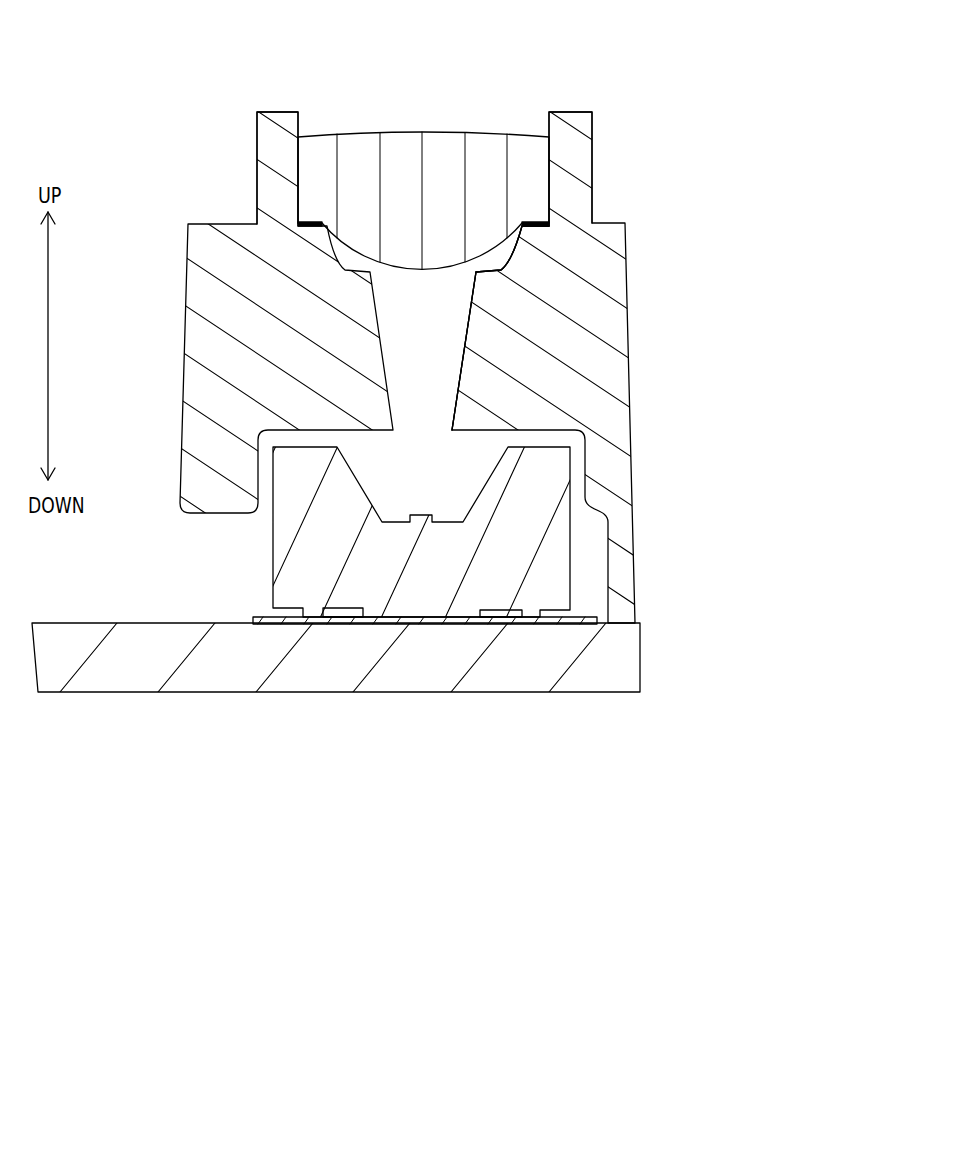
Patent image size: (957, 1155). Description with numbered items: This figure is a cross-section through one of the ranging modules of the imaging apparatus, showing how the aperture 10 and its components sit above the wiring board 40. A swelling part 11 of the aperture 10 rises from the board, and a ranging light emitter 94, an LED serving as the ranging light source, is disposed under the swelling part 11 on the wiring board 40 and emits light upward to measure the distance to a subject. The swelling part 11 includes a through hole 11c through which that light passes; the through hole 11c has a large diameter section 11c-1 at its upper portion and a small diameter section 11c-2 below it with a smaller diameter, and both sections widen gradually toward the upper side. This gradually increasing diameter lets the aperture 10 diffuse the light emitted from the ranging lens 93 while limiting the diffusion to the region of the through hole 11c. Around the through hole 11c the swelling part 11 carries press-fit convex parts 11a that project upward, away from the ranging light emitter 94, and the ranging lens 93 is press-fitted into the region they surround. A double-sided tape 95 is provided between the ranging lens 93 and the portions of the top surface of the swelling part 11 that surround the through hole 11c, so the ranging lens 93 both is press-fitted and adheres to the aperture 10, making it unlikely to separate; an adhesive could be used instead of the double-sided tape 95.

The aperture 10 is at (640, 450).
The swelling part 11 is at (193, 335).
The press-fit convex part 11a is at (265, 189).
The through hole 11c is at (722, 267).
The large diameter section 11c-1 is at (517, 241).
The small diameter section 11c-2 is at (470, 342).
The ranging lens 93 is at (403, 145).
The ranging light emitter 94 is at (562, 538).
The double-sided tape 95 is at (541, 222).
The wiring board 40 is at (123, 677).